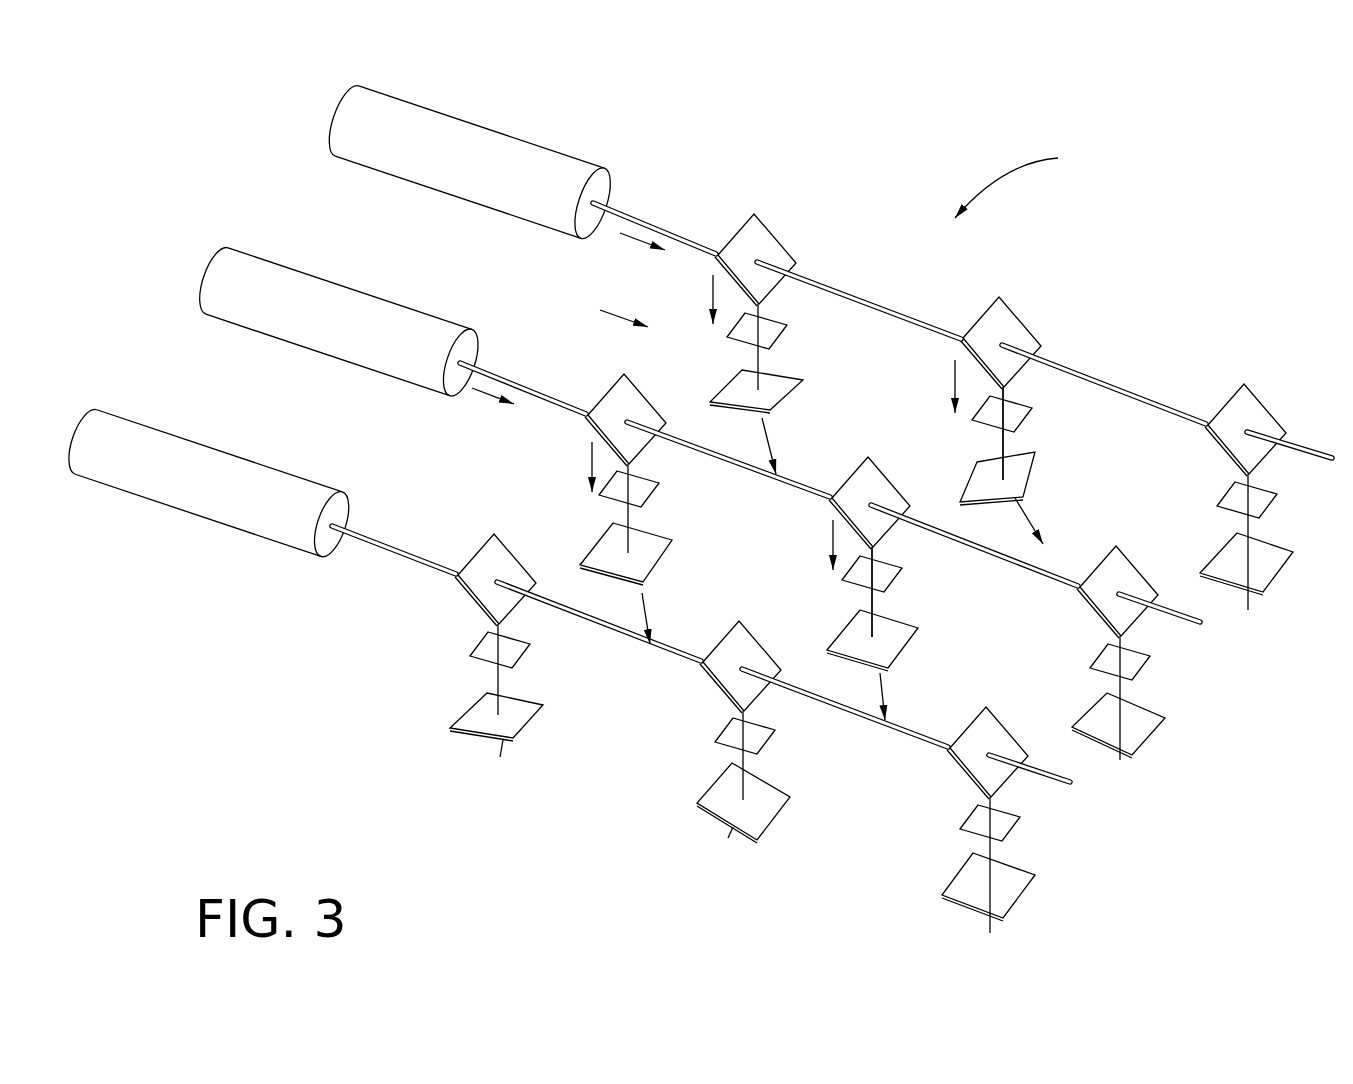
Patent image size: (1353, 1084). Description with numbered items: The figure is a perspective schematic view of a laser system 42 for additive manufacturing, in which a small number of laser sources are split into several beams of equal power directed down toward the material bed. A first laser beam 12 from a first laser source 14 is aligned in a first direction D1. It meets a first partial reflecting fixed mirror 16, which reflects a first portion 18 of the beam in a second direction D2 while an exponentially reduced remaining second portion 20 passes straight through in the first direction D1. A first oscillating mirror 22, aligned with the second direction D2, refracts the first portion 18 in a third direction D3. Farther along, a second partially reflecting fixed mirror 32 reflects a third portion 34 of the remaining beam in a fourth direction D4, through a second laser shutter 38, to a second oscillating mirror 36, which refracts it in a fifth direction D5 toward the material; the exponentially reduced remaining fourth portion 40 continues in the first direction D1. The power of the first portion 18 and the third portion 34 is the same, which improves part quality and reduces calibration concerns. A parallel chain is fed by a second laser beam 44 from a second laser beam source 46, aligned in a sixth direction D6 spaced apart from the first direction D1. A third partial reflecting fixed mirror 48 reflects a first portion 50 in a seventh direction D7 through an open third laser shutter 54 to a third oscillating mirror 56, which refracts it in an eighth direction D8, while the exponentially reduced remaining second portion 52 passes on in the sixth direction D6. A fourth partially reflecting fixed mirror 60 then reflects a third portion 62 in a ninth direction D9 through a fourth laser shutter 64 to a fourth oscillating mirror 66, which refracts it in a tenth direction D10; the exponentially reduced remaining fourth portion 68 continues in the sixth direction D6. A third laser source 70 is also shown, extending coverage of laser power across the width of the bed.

The first laser beam 12 is at (613, 207).
The first laser source 14 is at (392, 118).
The first partial reflecting fixed mirror 16 is at (752, 223).
The first portion of first laser beam 18 is at (765, 319).
The exponentially reduced remaining second portion of first laser beam 20 is at (876, 295).
The first oscillating mirror 22 is at (777, 398).
The second partially reflecting fixed mirror 32 is at (1002, 323).
The third portion of exponentially reduced remaining second portion of first laser b 34 is at (1003, 401).
The second oscillating mirror 36 is at (1032, 478).
The second laser shutter 38 is at (992, 427).
The exponentially reduced remaining fourth portion of first laser beam 40 is at (1082, 370).
The laser system 42 is at (1027, 180).
The second laser beam 44 is at (487, 373).
The second laser beam source 46 is at (277, 287).
The third partial reflecting fixed mirror 48 is at (587, 416).
The first portion of second laser beam 50 is at (632, 474).
The exponentially reduced remaining second portion of second laser beam 52 is at (727, 463).
The third laser shutter 54 is at (600, 497).
The third oscillating mirror 56 is at (603, 560).
The fourth partially reflecting fixed mirror 60 is at (873, 472).
The third portion of exponentially reduced remaining second portion of second laser 62 is at (877, 565).
The fourth laser shutter 64 is at (880, 582).
The fourth oscillating mirror 66 is at (887, 640).
The exponentially reduced remaining fourth portion of second laser beam 68 is at (1003, 557).
The third laser source 70 is at (130, 447).
The first direction D1 is at (630, 238).
The second direction D2 is at (712, 278).
The third direction D3 is at (768, 433).
The fourth direction D4 is at (953, 362).
The fifth direction D5 is at (1027, 503).
The sixth direction D6 is at (482, 397).
The seventh direction D7 is at (590, 446).
The eighth direction D8 is at (637, 605).
The ninth direction D9 is at (832, 528).
The tenth direction D10 is at (885, 683).